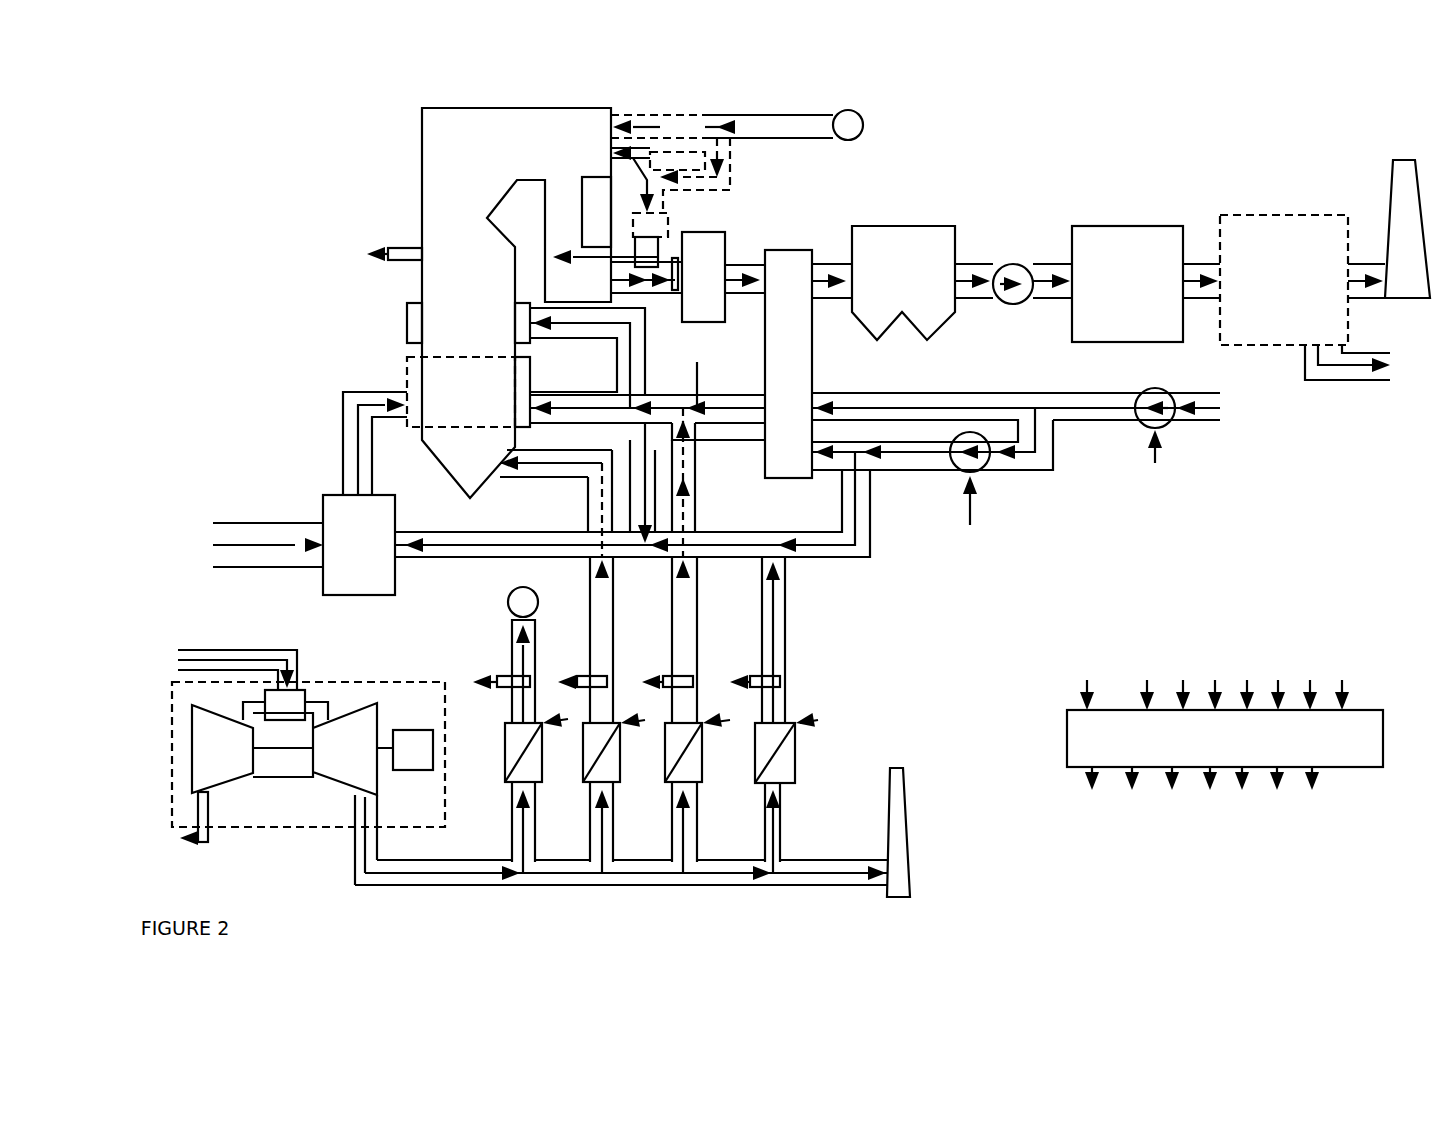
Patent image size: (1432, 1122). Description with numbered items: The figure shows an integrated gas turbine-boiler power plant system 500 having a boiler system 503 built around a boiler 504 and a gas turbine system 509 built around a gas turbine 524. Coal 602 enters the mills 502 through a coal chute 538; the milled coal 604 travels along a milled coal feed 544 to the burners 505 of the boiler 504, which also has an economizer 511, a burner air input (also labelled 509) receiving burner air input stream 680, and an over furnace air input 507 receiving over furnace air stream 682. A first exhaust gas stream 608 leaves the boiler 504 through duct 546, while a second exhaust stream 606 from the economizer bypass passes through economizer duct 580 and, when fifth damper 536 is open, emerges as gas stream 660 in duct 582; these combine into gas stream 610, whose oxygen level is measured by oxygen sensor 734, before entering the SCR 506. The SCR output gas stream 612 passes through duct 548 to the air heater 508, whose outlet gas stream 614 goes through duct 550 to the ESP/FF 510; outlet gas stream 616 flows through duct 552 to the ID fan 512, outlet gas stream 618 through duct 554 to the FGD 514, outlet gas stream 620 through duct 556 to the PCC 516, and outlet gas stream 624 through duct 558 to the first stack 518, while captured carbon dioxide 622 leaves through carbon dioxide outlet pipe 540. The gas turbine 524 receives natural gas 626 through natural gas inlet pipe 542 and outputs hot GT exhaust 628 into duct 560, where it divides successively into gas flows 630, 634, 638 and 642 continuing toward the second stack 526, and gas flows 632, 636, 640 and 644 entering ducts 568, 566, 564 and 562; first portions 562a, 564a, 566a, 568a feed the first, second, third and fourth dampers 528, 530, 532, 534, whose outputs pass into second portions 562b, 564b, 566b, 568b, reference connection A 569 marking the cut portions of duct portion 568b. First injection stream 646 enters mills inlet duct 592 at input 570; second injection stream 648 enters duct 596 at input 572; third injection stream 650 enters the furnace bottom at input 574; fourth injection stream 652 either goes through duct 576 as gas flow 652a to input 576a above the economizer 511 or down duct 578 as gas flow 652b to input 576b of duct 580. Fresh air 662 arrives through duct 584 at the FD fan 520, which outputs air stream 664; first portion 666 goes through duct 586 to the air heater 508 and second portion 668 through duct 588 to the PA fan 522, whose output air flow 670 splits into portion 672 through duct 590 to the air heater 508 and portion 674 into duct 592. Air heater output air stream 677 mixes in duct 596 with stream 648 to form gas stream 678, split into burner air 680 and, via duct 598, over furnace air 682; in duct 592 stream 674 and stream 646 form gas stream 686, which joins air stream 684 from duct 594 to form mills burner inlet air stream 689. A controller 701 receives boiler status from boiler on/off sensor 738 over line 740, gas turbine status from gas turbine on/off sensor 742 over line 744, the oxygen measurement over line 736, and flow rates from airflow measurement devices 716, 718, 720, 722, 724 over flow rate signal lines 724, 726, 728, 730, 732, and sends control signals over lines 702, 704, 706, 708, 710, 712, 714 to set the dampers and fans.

The integrated gas turbine-boiler power plant system 500 is at (262, 84).
The mills 502 is at (320, 510).
The boiler system 503 is at (250, 280).
The boiler 504 is at (533, 108).
The burners 505 is at (407, 377).
The SCR 506 is at (706, 323).
The over furnace air input 507 is at (525, 337).
The air heater 508 is at (788, 349).
The gas turbine system 509 is at (525, 380).
The ESP/FF 510 is at (903, 226).
The economizer 511 is at (582, 212).
The ID fan 512 is at (1013, 264).
The FGD 514 is at (1128, 226).
The PCC 516 is at (1282, 215).
The first stack 518 is at (1410, 160).
The FD fan 520 is at (1150, 390).
The PA fan 522 is at (985, 466).
The gas turbine 524 is at (268, 829).
The second stack 526 is at (907, 832).
The first damper 528 is at (796, 753).
The second damper 530 is at (703, 753).
The third damper 532 is at (621, 755).
The fourth damper 534 is at (539, 753).
The fifth damper 536 is at (660, 253).
The coal chute 538 is at (242, 522).
The CO2 outlet pipe 540 is at (1370, 353).
The natural gas inlet pipe 542 is at (247, 647).
The milled coal feed 544 is at (342, 442).
The duct 546 is at (645, 295).
The duct 548 is at (762, 254).
The duct 550 is at (824, 255).
The duct 552 is at (985, 262).
The duct 554 is at (1048, 262).
The duct 556 is at (1200, 262).
The duct 558 is at (1368, 262).
The duct 560 is at (355, 862).
The duct 562 is at (842, 810).
The first portion of duct 562 562a is at (786, 834).
The second portion of duct 562 562b is at (787, 641).
The duct 564 is at (743, 800).
The first portion of duct 564 564a is at (697, 840).
The second portion of duct 564 564b is at (700, 512).
The duct 566 is at (542, 755).
The first portion of duct 566 566a is at (590, 790).
The second portion of duct 566 566b is at (540, 478).
The duct 568 is at (480, 787).
The first portion of duct 568 568a is at (512, 818).
The second portion of duct 568 568b is at (767, 113).
The reference connection A 569 is at (862, 120).
The input of duct 592 570 is at (792, 567).
The input of duct 596 572 is at (700, 427).
The input 574 is at (495, 474).
The duct 576 is at (685, 115).
The input 576a is at (612, 122).
The input 576b is at (683, 177).
The duct 578 is at (735, 178).
The economizer duct 580 is at (678, 154).
The duct 582 is at (668, 260).
The duct 584 is at (1203, 428).
The duct 586 is at (1032, 392).
The duct 588 is at (1040, 472).
The duct 590 is at (923, 433).
The mills inlet duct 592 is at (838, 530).
The duct 594 is at (556, 449).
The burner air input duct 596 is at (737, 394).
The duct 598 is at (648, 362).
The coal 602 is at (223, 545).
The milled coal 604 is at (358, 440).
The second exhaust stream 606 is at (640, 185).
The first exhaust gas stream 608 is at (655, 282).
The gas stream 610 is at (675, 275).
The SCR output gas stream 612 is at (753, 285).
The outlet gas stream 614 is at (840, 252).
The outlet gas stream 616 is at (975, 302).
The outlet gas stream 618 is at (1055, 302).
The outlet gas stream 620 is at (1210, 270).
The captured CO2 622 is at (1373, 365).
The outlet gas stream 624 is at (1393, 205).
The natural gas 626 is at (178, 652).
The hot GT exhaust 628 is at (386, 886).
The gas flow 630 is at (588, 868).
The gas flow 632 is at (535, 824).
The gas flow 634 is at (640, 873).
The gas flow 636 is at (614, 834).
The gas flow 638 is at (730, 871).
The gas flow 640 is at (675, 795).
The gas flow 642 is at (833, 871).
The gas flow 644 is at (787, 796).
The first hot GT exhaust gas injection stream 646 is at (787, 611).
The second hot GT exhaust gas injection stream 648 is at (687, 496).
The third hot GT exhaust gas injection stream 650 is at (574, 480).
The fourth hot GT exhaust gas injection stream 652 is at (731, 115).
The gas flow 652a is at (617, 120).
The gas flow 652b is at (733, 160).
The gas stream 660 is at (633, 275).
The fresh air 662 is at (1187, 412).
The air stream 664 is at (1103, 422).
The first portion of air stream 664 666 is at (940, 392).
The second portion of air stream 664 668 is at (1010, 460).
The air flow 670 is at (925, 455).
The first portion of air stream 670 672 is at (915, 430).
The second portion of air stream 670 674 is at (818, 548).
The air heater output air stream 677 is at (705, 377).
The gas stream 678 is at (648, 405).
The burner air input stream 680 is at (570, 410).
The over furnace air stream 682 is at (570, 323).
The output air stream 684 is at (657, 453).
The gas stream 686 is at (705, 547).
The mills burner inlet air stream 689 is at (462, 562).
The controller 701 is at (1383, 737).
The control signal line 702 is at (827, 725).
The control signal line 704 is at (725, 720).
The control signal line 706 is at (644, 720).
The control signal C4 708 is at (564, 720).
The control signal line 710 is at (636, 229).
The control signal line 712 is at (1155, 468).
The control signal line 714 is at (970, 519).
The airflow measurement device 716 is at (780, 678).
The airflow measurement device 718 is at (740, 683).
The airflow measurement device 720 is at (607, 678).
The airflow measurement device 722 is at (531, 683).
The airflow measurement device / flow rate signal line 724 is at (658, 252).
The flow rate signal line 726 is at (742, 646).
The flow rate signal line 728 is at (655, 646).
The flow rate signal line 730 is at (567, 656).
The flow rate signal line 732 is at (552, 455).
The oxygen sensor 734 is at (673, 265).
The oxygen sensor line 736 is at (712, 238).
The boiler on/off sensor 738 is at (398, 238).
The boiler status input signal line 740 is at (366, 277).
The gas turbine on/off sensor 742 is at (203, 843).
The gas turbine status input signal line 744 is at (184, 843).